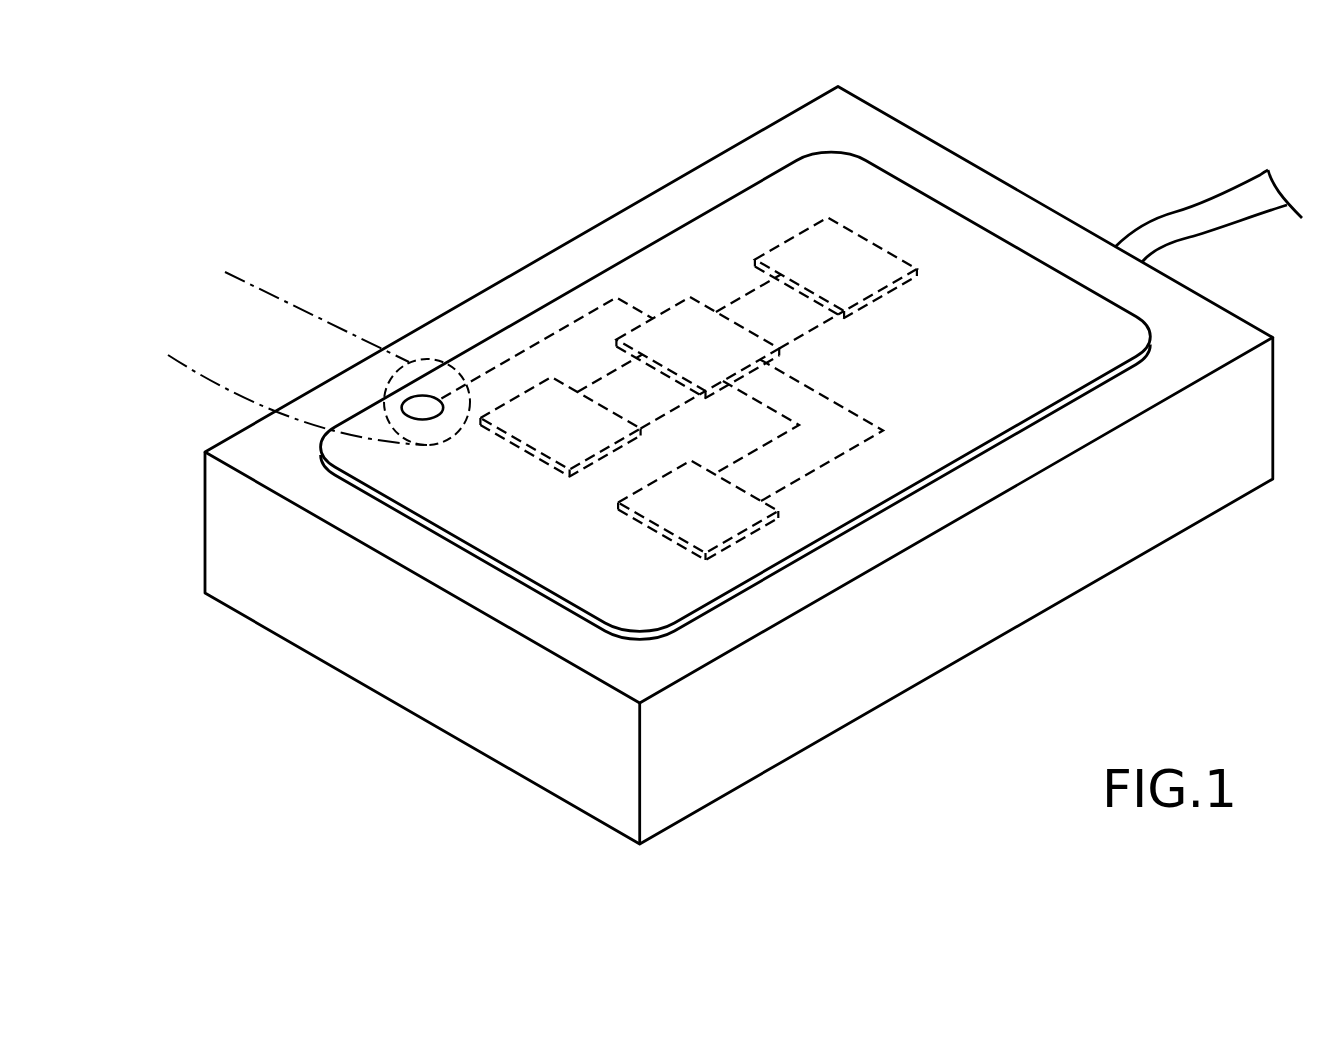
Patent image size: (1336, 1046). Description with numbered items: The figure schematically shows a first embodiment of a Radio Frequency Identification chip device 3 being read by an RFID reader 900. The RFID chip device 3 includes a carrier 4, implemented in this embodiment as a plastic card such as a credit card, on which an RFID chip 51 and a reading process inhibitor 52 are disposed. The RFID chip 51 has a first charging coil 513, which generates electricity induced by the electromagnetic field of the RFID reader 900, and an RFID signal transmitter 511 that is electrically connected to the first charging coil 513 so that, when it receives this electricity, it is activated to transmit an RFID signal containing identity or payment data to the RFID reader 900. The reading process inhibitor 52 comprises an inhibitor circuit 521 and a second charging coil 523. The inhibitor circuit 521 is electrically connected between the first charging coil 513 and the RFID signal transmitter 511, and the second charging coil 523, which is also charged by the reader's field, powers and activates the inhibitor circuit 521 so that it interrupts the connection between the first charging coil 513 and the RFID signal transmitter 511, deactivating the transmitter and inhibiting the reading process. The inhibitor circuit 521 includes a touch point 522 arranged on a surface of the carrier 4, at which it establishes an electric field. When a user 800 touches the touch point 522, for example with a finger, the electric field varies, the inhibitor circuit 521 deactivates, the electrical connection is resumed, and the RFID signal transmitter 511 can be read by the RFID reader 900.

The RFID chip device 3 is at (935, 190).
The carrier 4 is at (1000, 275).
The RFID chip 51 is at (786, 243).
The RFID signal transmitter 511 is at (837, 253).
The first charging coil 513 is at (548, 408).
The reading process inhibitor 52 is at (679, 300).
The inhibitor circuit 521 is at (673, 323).
The touch point 522 is at (420, 407).
The second charging coil 523 is at (720, 520).
The user 800 is at (263, 345).
The RFID reader 900 is at (1140, 523).